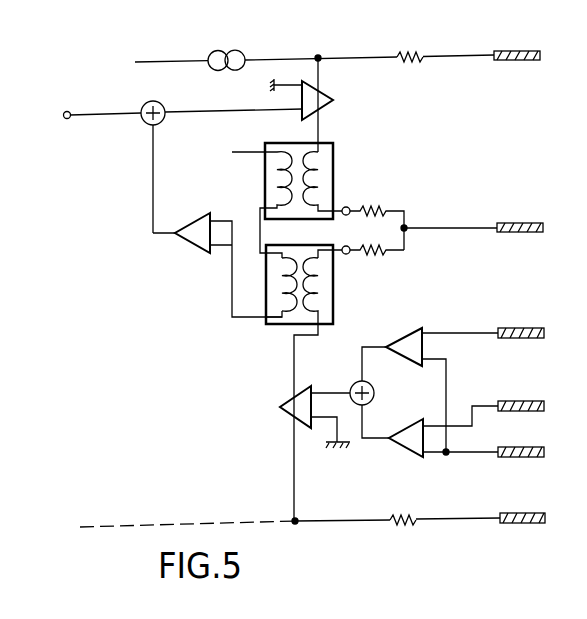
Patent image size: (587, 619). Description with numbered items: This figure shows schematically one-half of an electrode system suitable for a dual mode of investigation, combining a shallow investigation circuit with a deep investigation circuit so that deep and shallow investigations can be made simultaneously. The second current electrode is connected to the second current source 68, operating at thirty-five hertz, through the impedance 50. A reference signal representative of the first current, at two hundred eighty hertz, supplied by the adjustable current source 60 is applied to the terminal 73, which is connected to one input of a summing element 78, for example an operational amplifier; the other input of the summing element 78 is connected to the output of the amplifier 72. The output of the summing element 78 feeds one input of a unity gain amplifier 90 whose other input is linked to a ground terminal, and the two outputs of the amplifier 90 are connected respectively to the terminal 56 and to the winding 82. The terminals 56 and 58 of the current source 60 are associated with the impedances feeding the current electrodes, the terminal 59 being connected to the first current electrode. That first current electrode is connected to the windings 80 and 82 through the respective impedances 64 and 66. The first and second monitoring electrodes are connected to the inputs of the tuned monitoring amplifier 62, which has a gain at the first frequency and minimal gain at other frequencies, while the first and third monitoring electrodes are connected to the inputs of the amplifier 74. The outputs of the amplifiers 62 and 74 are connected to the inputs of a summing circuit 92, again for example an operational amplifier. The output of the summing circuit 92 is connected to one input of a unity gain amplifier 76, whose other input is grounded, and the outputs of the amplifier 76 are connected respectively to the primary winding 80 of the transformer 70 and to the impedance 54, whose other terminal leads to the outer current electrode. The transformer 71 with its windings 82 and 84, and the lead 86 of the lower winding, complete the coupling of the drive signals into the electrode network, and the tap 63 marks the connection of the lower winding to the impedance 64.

The impedance 50 is at (405, 53).
The impedance 54 is at (405, 514).
The terminal 56 is at (316, 58).
The terminal 58 is at (348, 206).
The terminal 59 is at (404, 228).
The adjustable current source 60 is at (84, 97).
The tuned monitoring amplifier 62 is at (408, 450).
The tap terminal 63 is at (350, 254).
The impedance 64 is at (390, 251).
The impedance 66 is at (376, 206).
The second current source 68 is at (225, 50).
The transformer 70 is at (282, 292).
The transformer 71 is at (330, 143).
The amplifier 72 is at (194, 224).
The terminal 73 is at (63, 119).
The amplifier 74 is at (402, 337).
The unity gain amplifier 76 is at (289, 410).
The summing element 78 is at (146, 123).
The primary winding 80 is at (322, 296).
The winding 82 is at (322, 163).
The transformer winding 84 is at (284, 158).
The winding lead 86 is at (286, 299).
The unity gain amplifier 90 is at (333, 96).
The summing circuit 92 is at (374, 393).